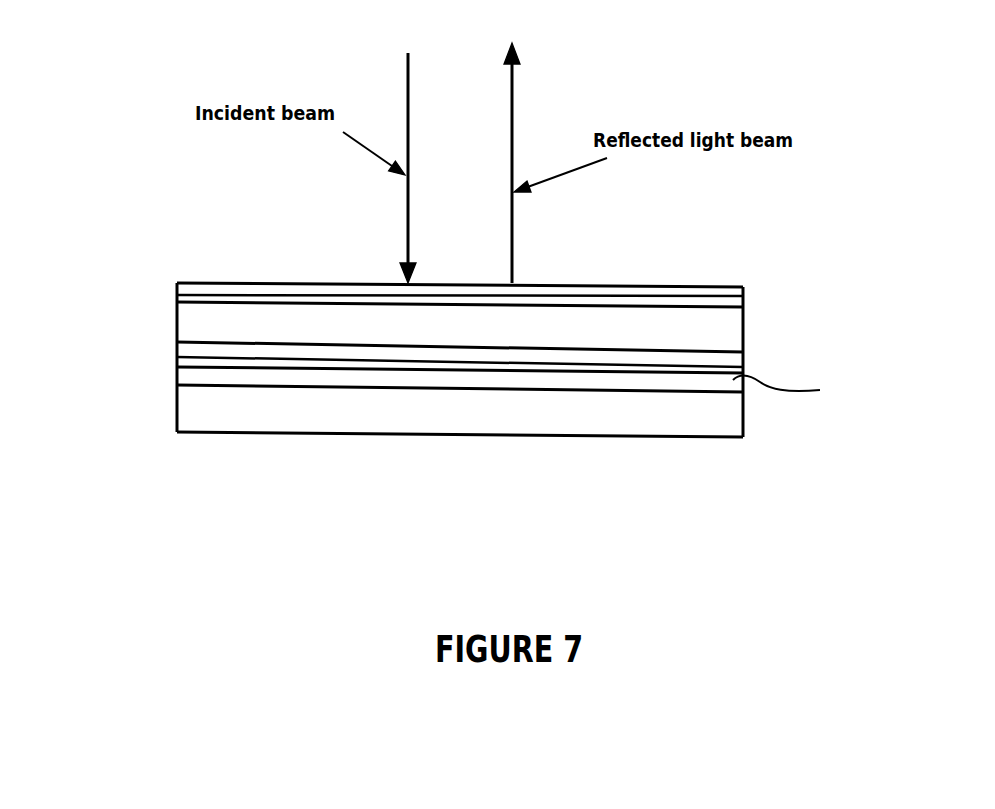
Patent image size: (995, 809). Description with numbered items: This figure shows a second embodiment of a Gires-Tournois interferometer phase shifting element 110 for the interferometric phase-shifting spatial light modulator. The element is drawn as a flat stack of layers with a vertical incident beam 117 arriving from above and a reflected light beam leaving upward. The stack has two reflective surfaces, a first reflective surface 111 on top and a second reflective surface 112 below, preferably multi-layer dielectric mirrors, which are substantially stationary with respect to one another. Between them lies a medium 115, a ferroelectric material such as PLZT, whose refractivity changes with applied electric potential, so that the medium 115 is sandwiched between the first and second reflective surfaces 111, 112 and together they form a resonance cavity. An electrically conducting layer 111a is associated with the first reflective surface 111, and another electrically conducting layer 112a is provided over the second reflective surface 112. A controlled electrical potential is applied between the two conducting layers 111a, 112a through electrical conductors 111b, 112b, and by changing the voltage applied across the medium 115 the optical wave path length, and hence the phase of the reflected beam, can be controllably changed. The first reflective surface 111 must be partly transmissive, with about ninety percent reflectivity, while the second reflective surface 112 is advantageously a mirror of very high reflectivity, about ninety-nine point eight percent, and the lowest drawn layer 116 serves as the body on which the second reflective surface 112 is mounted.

The phase shifting element 110 is at (181, 331).
The first reflective surface 111 is at (743, 292).
The electrically conducting layer 111a is at (177, 295).
The electrical conductor 111b is at (177, 283).
The second reflective surface 112 is at (720, 353).
The electrically conducting layer 112a is at (177, 352).
The electrical conductor 112b is at (177, 362).
The medium 115 is at (720, 333).
The substrate 116 is at (728, 418).
The incident beam 117 is at (408, 220).